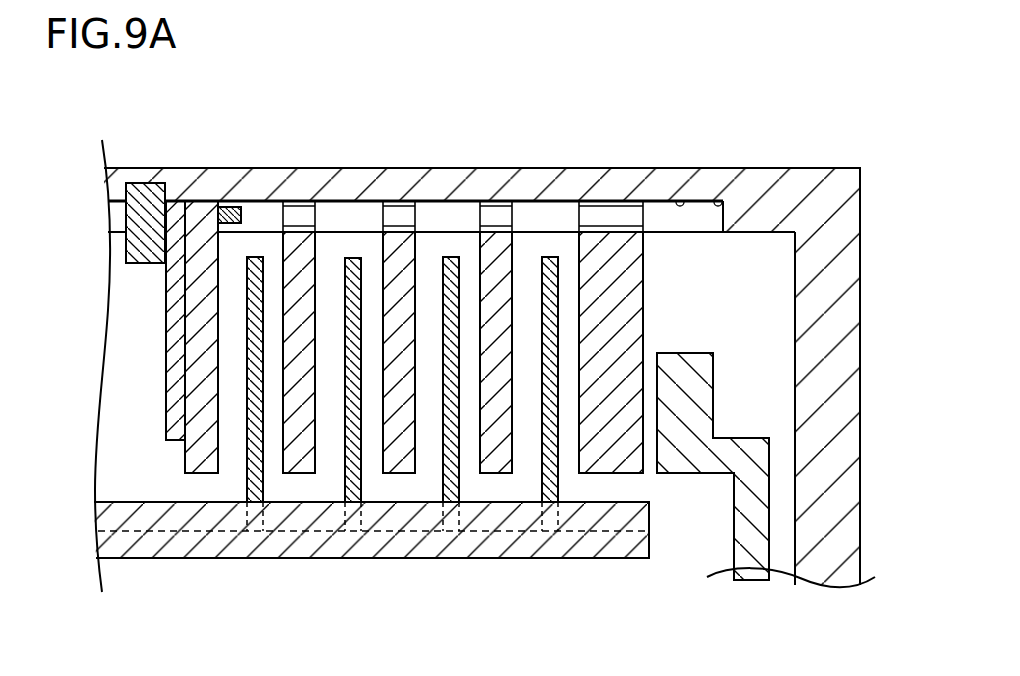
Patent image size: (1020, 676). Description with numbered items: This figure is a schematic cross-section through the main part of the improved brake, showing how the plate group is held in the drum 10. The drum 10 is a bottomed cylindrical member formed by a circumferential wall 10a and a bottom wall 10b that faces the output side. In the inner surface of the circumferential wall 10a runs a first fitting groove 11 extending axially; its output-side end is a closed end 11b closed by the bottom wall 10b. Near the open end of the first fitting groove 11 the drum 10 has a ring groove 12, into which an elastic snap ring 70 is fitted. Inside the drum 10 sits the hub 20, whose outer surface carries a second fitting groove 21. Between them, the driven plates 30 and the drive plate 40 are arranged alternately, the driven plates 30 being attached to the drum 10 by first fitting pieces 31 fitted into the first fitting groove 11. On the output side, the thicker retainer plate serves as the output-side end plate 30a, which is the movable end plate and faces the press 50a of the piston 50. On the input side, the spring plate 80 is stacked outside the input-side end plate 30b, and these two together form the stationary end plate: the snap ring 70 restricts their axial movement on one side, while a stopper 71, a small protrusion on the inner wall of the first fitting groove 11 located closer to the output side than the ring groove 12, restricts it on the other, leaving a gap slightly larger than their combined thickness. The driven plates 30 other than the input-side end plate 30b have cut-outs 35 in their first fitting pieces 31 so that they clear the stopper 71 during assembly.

The drum 10 is at (526, 360).
The circumferential wall 10a is at (790, 168).
The bottom wall 10b is at (835, 258).
The first fitting groove 11 is at (680, 201).
The closed end 11b is at (718, 201).
The ring groove 12 is at (152, 185).
The hub 20 is at (608, 548).
The second fitting groove 21 is at (650, 531).
The driven plate 30 is at (386, 292).
The output-side end plate 30a is at (640, 252).
The input-side end plate 30b is at (200, 300).
The first fitting piece 31 is at (202, 213).
The cut-out 35 is at (298, 215).
The drive plate 40 is at (449, 268).
The piston 50 is at (700, 352).
The press 50a is at (688, 382).
The snap ring 70 is at (127, 252).
The stopper 71 is at (228, 212).
The spring plate 80 is at (177, 377).